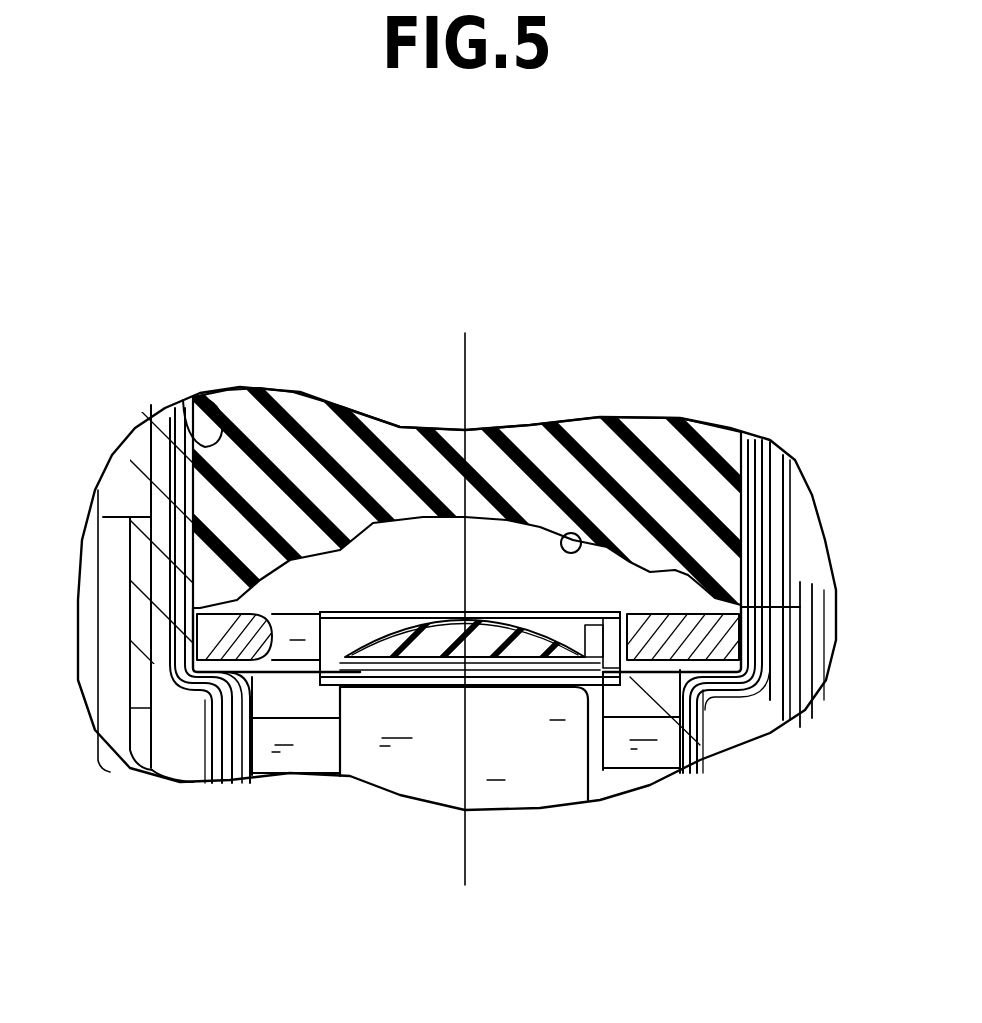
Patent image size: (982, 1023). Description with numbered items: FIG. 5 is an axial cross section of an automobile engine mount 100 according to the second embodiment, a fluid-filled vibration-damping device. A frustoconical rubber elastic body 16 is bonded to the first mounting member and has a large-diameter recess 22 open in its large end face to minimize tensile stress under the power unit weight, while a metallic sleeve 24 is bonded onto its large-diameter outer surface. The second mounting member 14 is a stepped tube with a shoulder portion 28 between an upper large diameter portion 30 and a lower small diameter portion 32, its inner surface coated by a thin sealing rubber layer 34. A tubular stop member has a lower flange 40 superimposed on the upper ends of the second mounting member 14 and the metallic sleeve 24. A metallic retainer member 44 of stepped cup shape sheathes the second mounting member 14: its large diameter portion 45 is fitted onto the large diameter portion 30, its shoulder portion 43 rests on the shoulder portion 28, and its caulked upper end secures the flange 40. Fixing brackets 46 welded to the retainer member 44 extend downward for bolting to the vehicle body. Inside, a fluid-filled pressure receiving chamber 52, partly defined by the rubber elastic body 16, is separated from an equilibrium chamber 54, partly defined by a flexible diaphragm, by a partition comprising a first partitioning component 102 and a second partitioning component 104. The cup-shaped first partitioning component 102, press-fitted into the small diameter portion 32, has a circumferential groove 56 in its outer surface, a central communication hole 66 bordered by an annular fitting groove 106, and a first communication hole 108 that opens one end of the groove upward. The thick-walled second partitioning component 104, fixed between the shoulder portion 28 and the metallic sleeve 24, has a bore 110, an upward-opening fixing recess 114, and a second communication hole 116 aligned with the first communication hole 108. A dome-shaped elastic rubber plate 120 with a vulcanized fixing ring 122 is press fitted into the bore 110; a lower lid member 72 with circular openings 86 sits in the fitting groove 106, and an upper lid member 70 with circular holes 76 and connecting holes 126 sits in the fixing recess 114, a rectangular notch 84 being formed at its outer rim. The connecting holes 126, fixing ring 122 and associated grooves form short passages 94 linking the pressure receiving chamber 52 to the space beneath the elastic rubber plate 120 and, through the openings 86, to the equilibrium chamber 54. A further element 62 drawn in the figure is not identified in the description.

The automobile engine mount 100 is at (714, 383).
The second mounting member 14 is at (767, 550).
The rubber elastic body 16 is at (438, 463).
The large-diameter recess 22 is at (565, 533).
The metallic sleeve 24 is at (740, 507).
The shoulder portion 28 is at (130, 708).
The large diameter portion 30 is at (175, 573).
The small diameter portion 32 is at (212, 747).
The sealing rubber layer 34 is at (175, 606).
The flange 40 is at (180, 417).
The shoulder portion 43 is at (150, 725).
The retainer member 44 is at (142, 477).
The large diameter portion 45 is at (160, 540).
The fixing brackets 46 is at (130, 645).
The pressure receiving chamber 52 is at (352, 560).
The equilibrium chamber 54 is at (558, 790).
The circumferential groove 56 is at (604, 770).
The side portion 62 is at (672, 755).
The communication hole 66 is at (377, 690).
The upper lid member 70 is at (432, 620).
The lower lid member 72 is at (440, 690).
The circular holes 76 is at (400, 640).
The notch 84 is at (335, 655).
The circular openings 86 is at (537, 690).
The short passages 94 is at (668, 614).
The first partitioning component 102 is at (703, 687).
The second partitioning component 104 is at (763, 640).
The fitting groove 106 is at (660, 757).
The first communication hole 108 is at (300, 690).
The bore 110 is at (562, 675).
The fixing recess 114 is at (612, 635).
The second communication hole 116 is at (268, 612).
The elastic rubber plate 120 is at (495, 635).
The fixing ring 122 is at (293, 755).
The connecting holes 126 is at (594, 630).